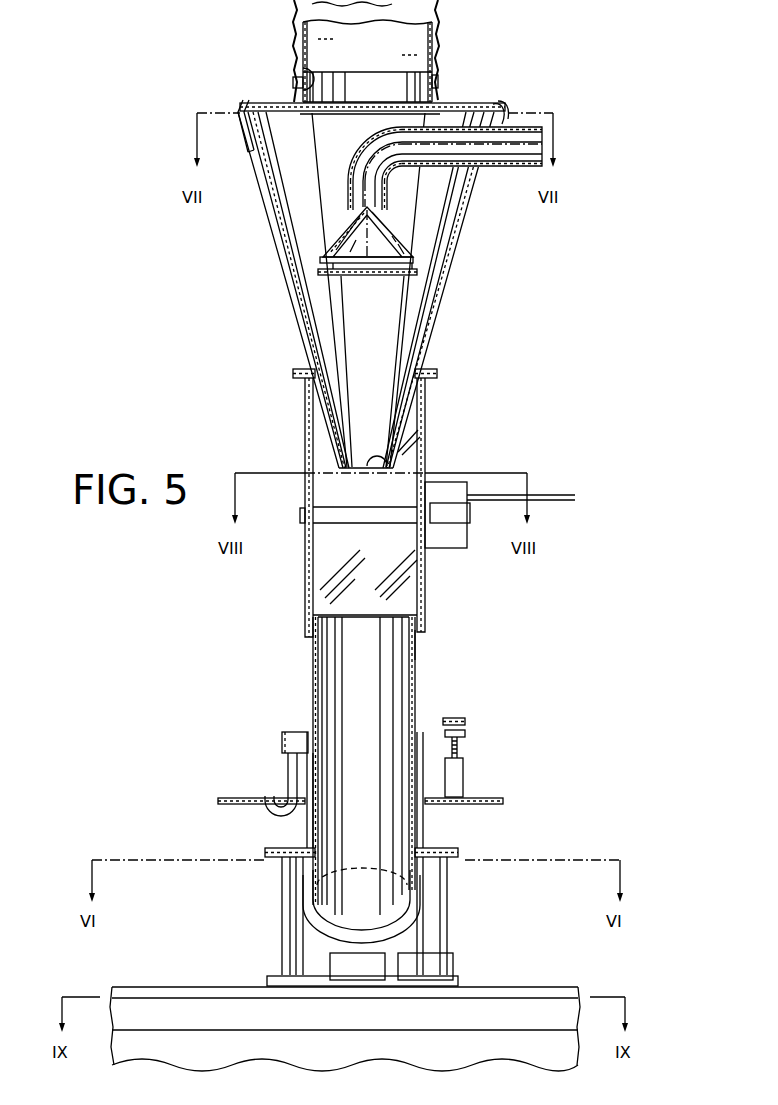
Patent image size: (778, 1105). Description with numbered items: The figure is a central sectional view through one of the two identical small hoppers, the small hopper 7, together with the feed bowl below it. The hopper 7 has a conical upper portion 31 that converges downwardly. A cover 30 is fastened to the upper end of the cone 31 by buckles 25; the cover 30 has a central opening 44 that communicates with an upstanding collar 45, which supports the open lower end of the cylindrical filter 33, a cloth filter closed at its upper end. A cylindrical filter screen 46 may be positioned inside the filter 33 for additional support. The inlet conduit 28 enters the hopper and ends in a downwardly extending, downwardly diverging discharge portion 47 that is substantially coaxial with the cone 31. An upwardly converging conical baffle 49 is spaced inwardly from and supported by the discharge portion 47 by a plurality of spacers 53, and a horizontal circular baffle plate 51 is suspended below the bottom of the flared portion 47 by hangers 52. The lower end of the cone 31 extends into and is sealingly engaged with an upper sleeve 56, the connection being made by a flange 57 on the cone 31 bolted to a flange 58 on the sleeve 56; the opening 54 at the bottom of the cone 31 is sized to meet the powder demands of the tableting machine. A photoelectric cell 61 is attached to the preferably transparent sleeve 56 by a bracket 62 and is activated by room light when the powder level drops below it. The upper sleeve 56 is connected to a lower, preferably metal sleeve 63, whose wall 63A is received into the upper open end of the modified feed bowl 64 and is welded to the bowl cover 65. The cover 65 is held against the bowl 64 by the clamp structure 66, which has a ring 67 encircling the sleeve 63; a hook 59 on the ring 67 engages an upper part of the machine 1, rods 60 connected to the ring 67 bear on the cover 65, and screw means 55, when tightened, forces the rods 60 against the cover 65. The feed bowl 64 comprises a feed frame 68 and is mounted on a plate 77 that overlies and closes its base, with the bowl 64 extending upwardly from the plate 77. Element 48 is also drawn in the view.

The machine 1 is at (487, 795).
The small hopper 7 is at (550, 296).
The buckles 25 is at (248, 130).
The inlet conduit 28 is at (520, 127).
The cover 30 is at (448, 107).
The conical upper portion 31 is at (292, 290).
The cylindrical filter 33 is at (440, 9).
The central opening 44 is at (337, 113).
The upstanding collar 45 is at (303, 68).
The cylindrical filter screen 46 is at (313, 52).
The discharge portion 47 is at (349, 205).
The deflector cone 48 is at (383, 230).
The conical baffle 49 is at (348, 232).
The baffle plate 51 is at (363, 276).
The hangers 52 is at (320, 262).
The spacers 53 is at (407, 240).
The opening 54 is at (375, 470).
The screw means 55 is at (467, 717).
The upper sleeve 56 is at (307, 447).
The flange 57 is at (310, 368).
The flange 58 is at (296, 380).
The hook 59 is at (285, 773).
The rods 60 is at (305, 825).
The photoelectric cell 61 is at (455, 540).
The bracket 62 is at (450, 513).
The lower sleeve 63 is at (418, 685).
The inner tube wall 63A is at (432, 648).
The feed bowl 64 is at (452, 906).
The cover 65 is at (448, 848).
The clamp structure 66 is at (264, 735).
The ring 67 is at (285, 732).
The feed frame 68 is at (560, 1010).
The plate 77 is at (517, 987).